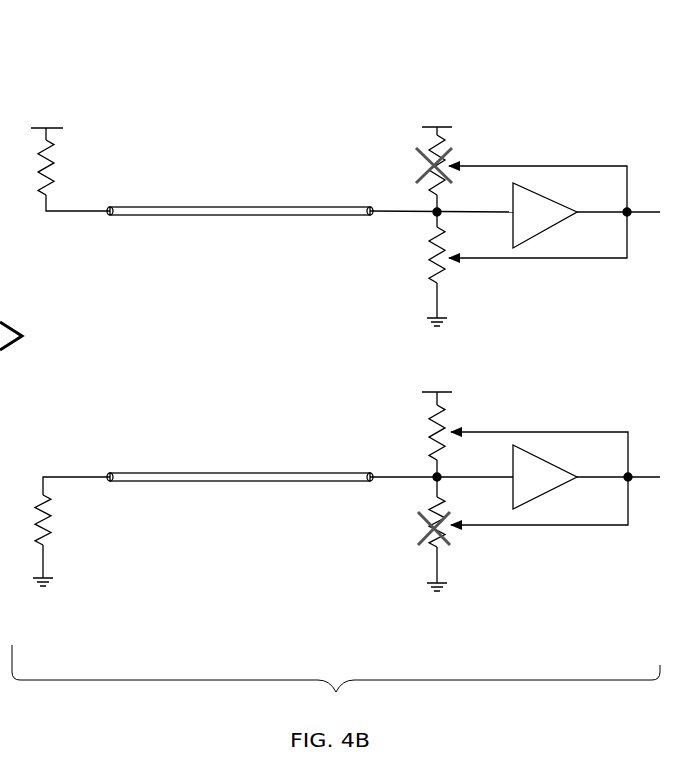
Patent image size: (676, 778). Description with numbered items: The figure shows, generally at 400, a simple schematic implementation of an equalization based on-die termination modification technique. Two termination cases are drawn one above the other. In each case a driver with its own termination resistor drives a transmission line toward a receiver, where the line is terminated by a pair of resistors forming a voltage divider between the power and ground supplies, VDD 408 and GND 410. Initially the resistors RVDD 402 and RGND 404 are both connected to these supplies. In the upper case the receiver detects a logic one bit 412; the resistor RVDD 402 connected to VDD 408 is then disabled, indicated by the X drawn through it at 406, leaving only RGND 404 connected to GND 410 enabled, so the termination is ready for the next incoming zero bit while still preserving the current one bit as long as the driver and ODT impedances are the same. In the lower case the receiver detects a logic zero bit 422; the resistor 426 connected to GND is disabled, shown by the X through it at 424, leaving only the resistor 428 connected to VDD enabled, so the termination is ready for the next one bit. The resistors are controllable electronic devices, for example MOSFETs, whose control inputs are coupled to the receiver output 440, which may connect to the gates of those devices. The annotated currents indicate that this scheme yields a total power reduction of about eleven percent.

The schematic implementation 400 is at (557, 77).
The RVDD resistor 402 is at (376, 181).
The RGND resistor 404 is at (375, 272).
The disabled RVDD termination resistor 406 is at (453, 148).
The VDD 408 is at (459, 238).
The GND 410 is at (462, 469).
The '1' data bit 412 is at (310, 197).
The '0' data bit 422 is at (273, 526).
The X through resistor 424 is at (453, 547).
The resistor connected to GND 426 is at (387, 540).
The resistor connected to VDD 428 is at (387, 451).
The receiver output 440 is at (546, 345).